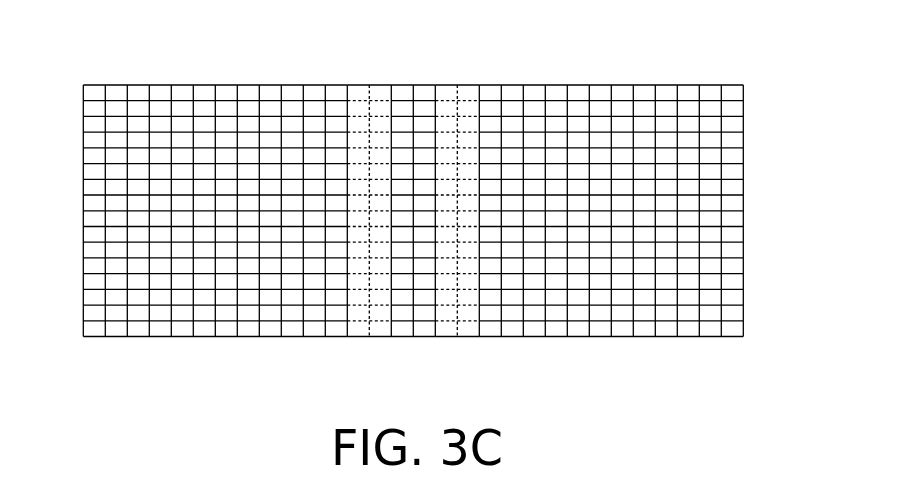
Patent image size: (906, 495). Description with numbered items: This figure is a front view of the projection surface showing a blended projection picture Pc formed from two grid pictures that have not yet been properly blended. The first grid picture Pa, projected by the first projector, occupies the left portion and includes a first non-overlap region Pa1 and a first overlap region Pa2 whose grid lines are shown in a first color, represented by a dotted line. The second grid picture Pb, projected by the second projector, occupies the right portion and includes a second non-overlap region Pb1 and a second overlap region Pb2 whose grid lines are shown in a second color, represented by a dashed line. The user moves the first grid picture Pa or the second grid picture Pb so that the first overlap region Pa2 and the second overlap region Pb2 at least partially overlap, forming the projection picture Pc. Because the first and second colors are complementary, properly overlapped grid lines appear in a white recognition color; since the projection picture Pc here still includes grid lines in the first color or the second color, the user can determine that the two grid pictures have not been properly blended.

The first grid picture Pa is at (233, 184).
The first non-overlap region Pa1 is at (347, 79).
The first overlap region Pa2 is at (436, 79).
The second grid picture Pb is at (594, 237).
The second non-overlap region Pb1 is at (611, 237).
The second overlap region Pb2 is at (478, 340).
The blended projection picture Pc is at (416, 217).